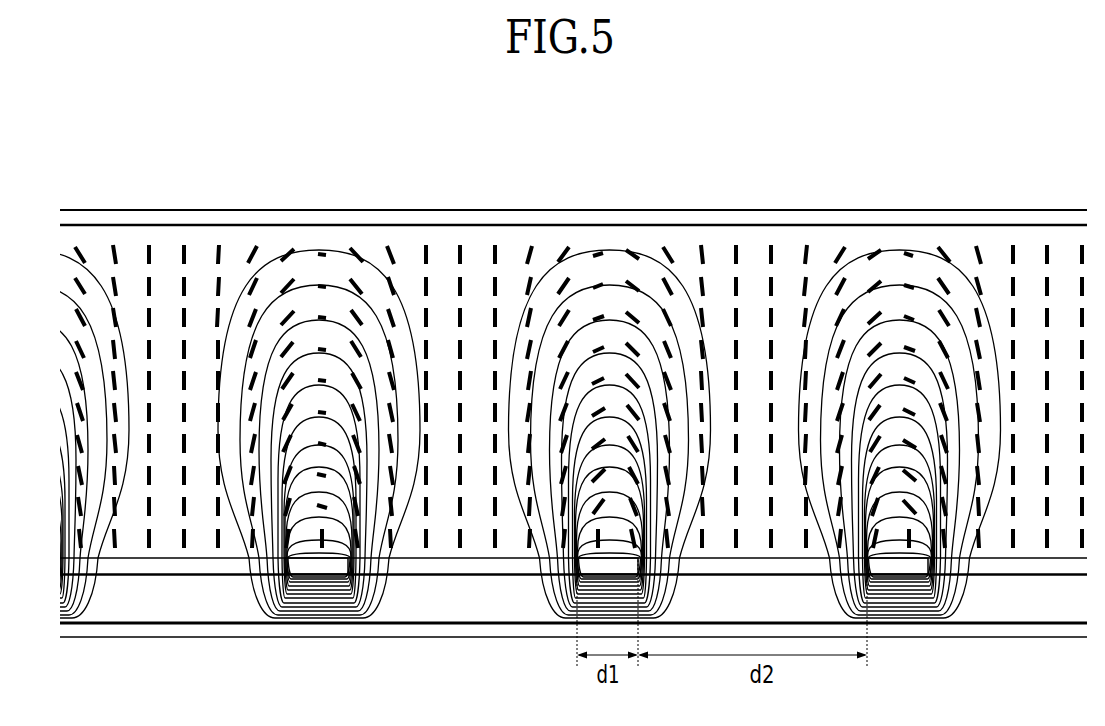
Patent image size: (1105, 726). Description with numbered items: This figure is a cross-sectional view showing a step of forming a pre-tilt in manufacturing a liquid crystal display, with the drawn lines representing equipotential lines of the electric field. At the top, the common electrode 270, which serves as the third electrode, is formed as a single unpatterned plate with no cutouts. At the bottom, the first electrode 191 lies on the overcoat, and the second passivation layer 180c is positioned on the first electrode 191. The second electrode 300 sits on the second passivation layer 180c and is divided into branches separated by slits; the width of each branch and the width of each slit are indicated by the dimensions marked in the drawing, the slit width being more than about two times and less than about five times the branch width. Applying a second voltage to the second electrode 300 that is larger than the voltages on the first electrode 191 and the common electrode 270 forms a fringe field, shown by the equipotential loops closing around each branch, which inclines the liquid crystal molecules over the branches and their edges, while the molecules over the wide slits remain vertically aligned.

The common electrode 270 is at (166, 218).
The first electrode 191 is at (140, 630).
The second electrode 300 is at (317, 570).
The second passivation layer 180c is at (453, 605).